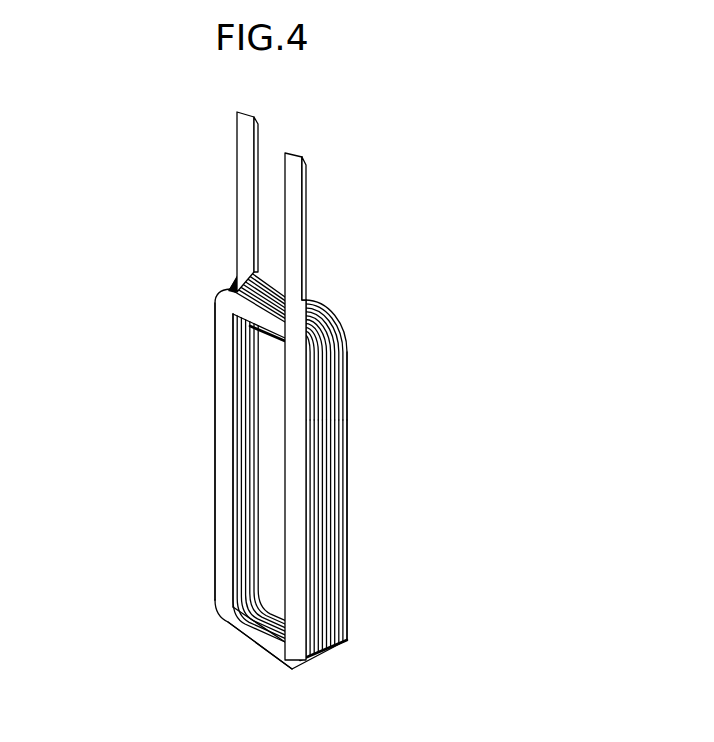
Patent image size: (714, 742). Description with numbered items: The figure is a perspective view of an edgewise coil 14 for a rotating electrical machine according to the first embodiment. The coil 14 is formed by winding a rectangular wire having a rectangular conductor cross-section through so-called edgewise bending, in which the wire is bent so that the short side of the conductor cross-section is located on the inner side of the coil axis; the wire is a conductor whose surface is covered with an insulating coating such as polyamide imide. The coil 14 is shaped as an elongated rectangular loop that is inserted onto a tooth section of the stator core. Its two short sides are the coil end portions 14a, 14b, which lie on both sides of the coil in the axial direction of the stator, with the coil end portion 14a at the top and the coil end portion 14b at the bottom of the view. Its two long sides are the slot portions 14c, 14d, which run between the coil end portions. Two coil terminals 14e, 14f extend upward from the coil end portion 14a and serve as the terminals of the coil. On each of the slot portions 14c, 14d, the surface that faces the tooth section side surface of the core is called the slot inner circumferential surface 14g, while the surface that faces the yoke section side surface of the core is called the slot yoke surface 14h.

The edgewise coil 14 is at (84, 117).
The coil end portion 14a is at (238, 303).
The coil end portion 14b is at (243, 633).
The slot portion 14c is at (330, 468).
The slot portion 14d is at (225, 460).
The coil terminal 14e is at (242, 139).
The coil terminal 14f is at (300, 193).
The slot inner circumferential surface 14g is at (243, 407).
The slot yoke surface 14h is at (345, 396).